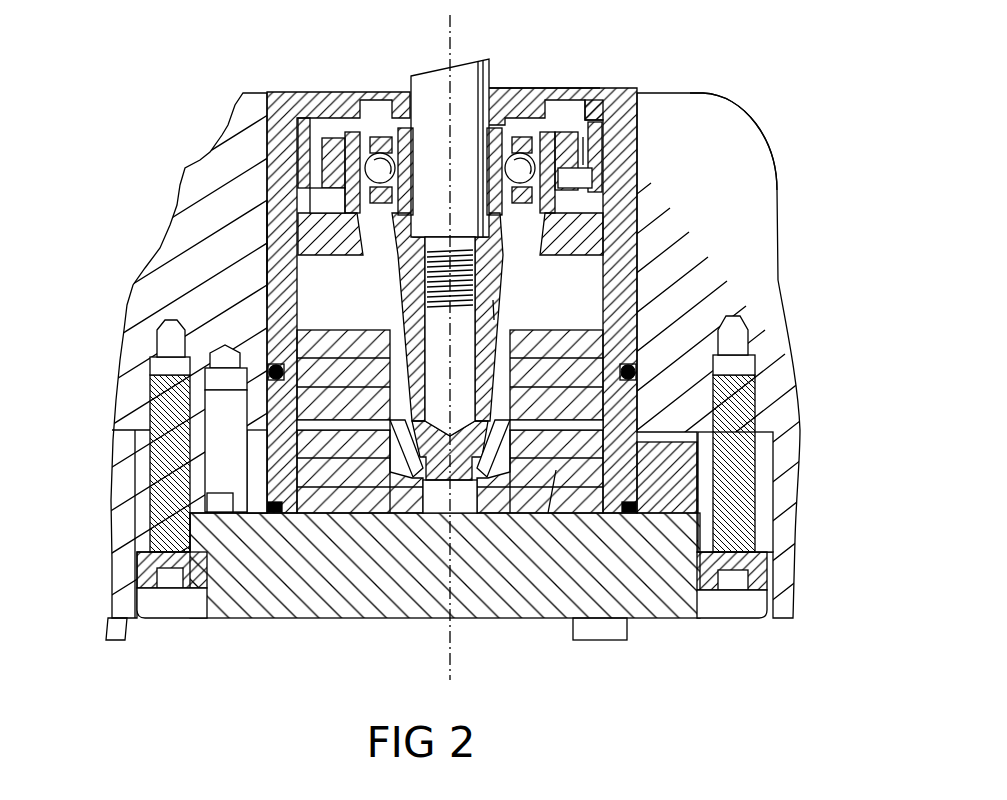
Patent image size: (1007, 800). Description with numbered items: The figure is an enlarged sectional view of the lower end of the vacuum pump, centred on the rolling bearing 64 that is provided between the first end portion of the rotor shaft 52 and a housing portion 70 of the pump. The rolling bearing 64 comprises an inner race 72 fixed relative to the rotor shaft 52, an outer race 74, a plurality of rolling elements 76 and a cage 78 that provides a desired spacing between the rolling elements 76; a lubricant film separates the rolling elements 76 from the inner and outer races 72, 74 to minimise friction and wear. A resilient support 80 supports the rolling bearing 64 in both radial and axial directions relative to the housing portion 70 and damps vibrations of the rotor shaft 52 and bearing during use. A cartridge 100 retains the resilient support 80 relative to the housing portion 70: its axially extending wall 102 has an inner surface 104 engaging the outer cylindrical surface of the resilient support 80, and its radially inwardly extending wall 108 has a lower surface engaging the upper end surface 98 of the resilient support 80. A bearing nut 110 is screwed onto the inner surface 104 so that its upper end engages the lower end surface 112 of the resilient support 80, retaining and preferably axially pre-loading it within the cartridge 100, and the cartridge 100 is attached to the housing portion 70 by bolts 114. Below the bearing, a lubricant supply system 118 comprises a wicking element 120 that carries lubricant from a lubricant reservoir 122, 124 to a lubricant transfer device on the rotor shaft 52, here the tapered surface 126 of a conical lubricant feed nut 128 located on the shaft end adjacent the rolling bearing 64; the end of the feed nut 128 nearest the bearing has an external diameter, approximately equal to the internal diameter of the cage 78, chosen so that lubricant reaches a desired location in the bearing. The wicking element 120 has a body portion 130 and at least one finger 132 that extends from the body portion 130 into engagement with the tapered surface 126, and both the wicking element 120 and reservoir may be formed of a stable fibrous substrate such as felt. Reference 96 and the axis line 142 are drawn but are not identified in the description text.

The rotor shaft 52 is at (430, 80).
The rolling bearing 64 is at (373, 126).
The housing portion 70 is at (697, 100).
The inner race 72 is at (428, 346).
The outer race 74 is at (552, 125).
The rolling elements 76 is at (487, 172).
The cage 78 is at (485, 199).
The resilient support 80 is at (605, 180).
The retaining ring 96 is at (566, 120).
The upper end surface 98 is at (320, 130).
The cartridge 100 is at (615, 83).
The axially extending wall 102 is at (268, 168).
The inner surface 104 is at (290, 118).
The radially inwardly extending wall 108 is at (517, 95).
The bearing nut 110 is at (596, 215).
The lower end surface 112 is at (637, 207).
The bolts 114 is at (240, 515).
The lubricant supply system 118 is at (408, 466).
The wicking element 120 is at (383, 417).
The lubricant reservoir 122 is at (337, 363).
The lubricant reservoir 124 is at (548, 425).
The tapered surface 126 is at (400, 273).
The conical lubricant feed nut 128 is at (492, 308).
The body portion 130 is at (560, 425).
The finger 132 is at (425, 480).
The axis 142 is at (448, 655).